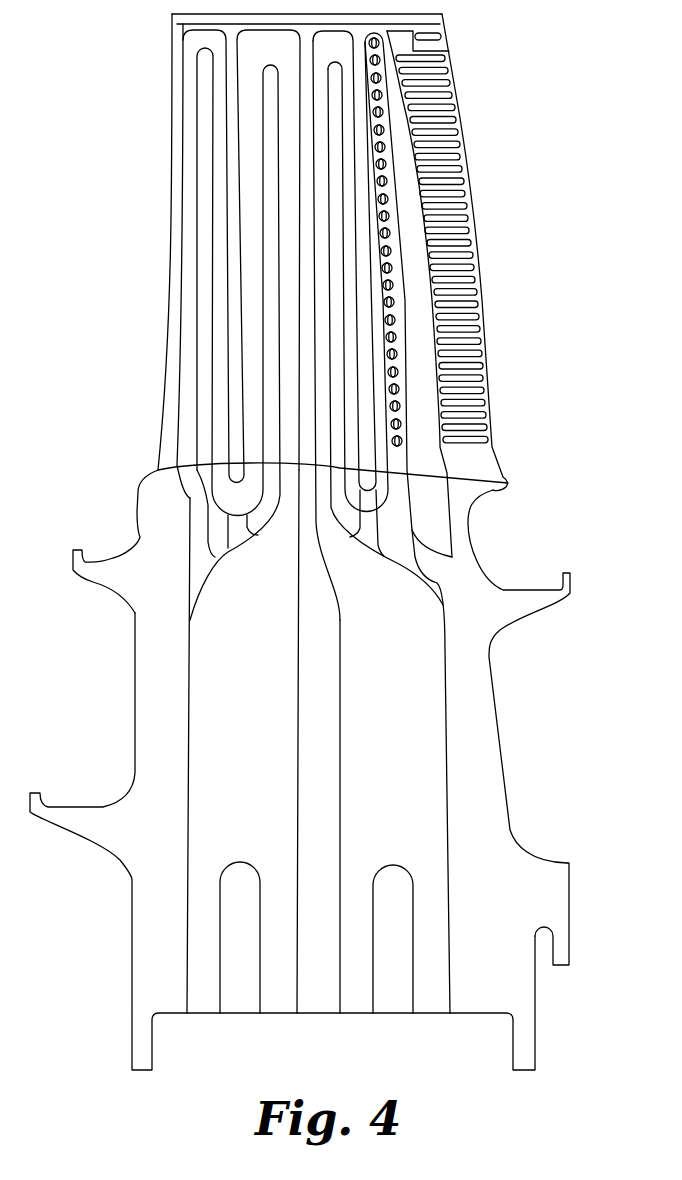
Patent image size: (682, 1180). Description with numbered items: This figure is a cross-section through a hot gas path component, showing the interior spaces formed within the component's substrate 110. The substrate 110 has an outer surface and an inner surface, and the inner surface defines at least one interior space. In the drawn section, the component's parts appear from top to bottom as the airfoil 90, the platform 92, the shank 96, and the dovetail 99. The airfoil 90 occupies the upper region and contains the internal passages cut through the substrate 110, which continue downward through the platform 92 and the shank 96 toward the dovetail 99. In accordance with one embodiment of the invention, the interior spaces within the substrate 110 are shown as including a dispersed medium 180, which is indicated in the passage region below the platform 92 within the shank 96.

The airfoil 90 is at (172, 283).
The platform 92 is at (155, 492).
The substrate 110 is at (135, 613).
The dispersed medium 180 is at (245, 700).
The shank 96 is at (472, 710).
The dovetail 99 is at (505, 965).